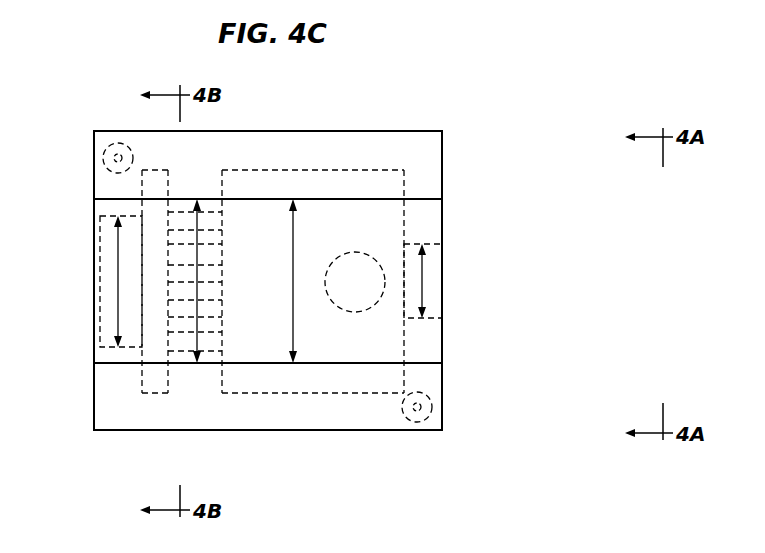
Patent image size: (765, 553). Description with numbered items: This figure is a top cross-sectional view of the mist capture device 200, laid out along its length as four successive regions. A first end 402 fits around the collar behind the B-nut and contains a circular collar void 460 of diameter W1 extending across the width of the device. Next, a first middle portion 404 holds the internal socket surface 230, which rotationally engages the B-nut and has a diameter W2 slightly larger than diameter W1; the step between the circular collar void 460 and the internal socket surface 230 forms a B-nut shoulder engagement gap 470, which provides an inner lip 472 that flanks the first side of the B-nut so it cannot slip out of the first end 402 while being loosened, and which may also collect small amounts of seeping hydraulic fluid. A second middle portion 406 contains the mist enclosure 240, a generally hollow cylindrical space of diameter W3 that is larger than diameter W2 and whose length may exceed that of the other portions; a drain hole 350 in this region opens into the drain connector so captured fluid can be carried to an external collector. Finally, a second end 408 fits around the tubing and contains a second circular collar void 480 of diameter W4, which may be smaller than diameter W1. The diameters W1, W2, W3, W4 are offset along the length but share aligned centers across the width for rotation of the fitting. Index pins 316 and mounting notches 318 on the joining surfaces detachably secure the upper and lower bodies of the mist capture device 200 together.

The mist capture device 200 is at (492, 121).
The internal socket surface 230 is at (205, 207).
The mist enclosure 240 is at (313, 210).
The index pins 316 is at (118, 143).
The mounting notches 318 is at (108, 157).
The drain hole 350 is at (362, 252).
The first end 402 is at (168, 441).
The first middle portion 404 is at (222, 441).
The second middle portion 406 is at (404, 441).
The second end 408 is at (442, 441).
The circular collar void 460 is at (102, 247).
The B-nut shoulder engagement gap 470 is at (148, 383).
The inner lip 472 is at (143, 352).
The second circular collar void 480 is at (433, 272).
The diameter of the circular collar void W1 is at (118, 285).
The diameter of the internal socket surface W2 is at (197, 258).
The diameter of the mist enclosure W3 is at (293, 312).
The diameter of the second circular collar void W4 is at (423, 292).